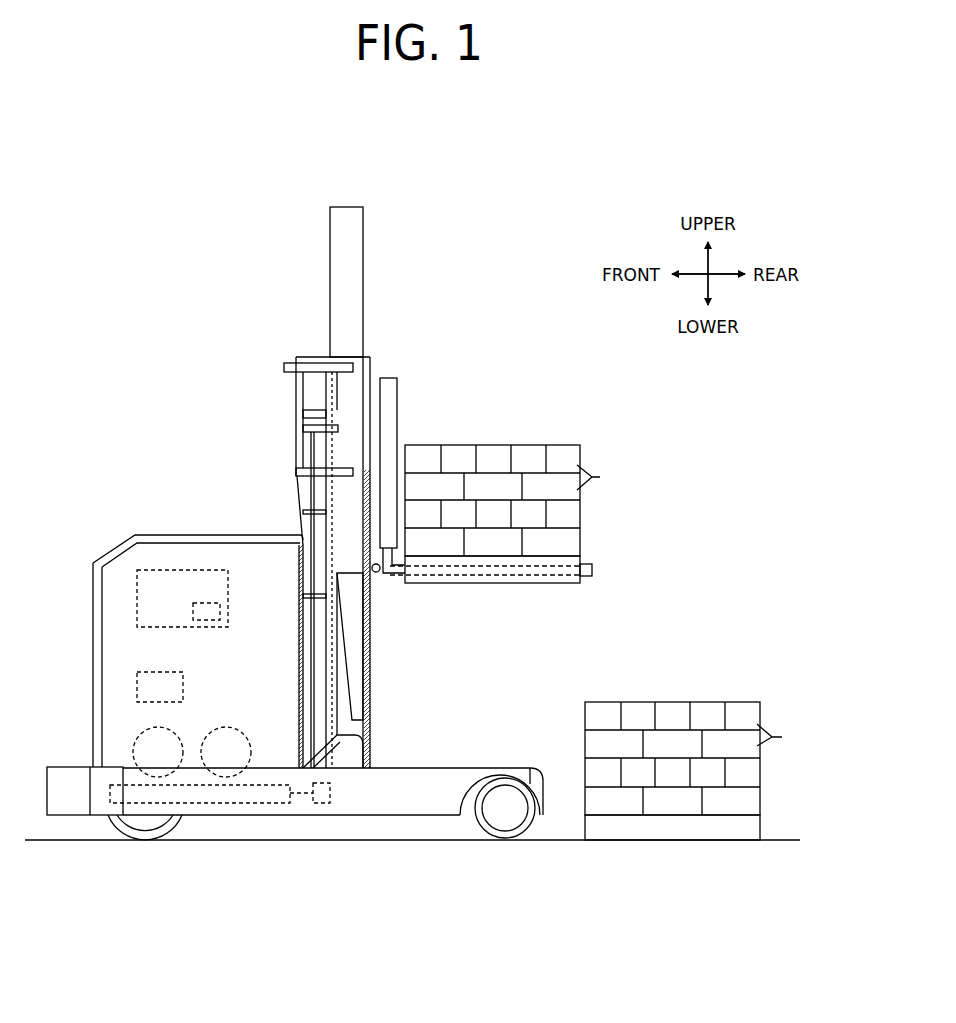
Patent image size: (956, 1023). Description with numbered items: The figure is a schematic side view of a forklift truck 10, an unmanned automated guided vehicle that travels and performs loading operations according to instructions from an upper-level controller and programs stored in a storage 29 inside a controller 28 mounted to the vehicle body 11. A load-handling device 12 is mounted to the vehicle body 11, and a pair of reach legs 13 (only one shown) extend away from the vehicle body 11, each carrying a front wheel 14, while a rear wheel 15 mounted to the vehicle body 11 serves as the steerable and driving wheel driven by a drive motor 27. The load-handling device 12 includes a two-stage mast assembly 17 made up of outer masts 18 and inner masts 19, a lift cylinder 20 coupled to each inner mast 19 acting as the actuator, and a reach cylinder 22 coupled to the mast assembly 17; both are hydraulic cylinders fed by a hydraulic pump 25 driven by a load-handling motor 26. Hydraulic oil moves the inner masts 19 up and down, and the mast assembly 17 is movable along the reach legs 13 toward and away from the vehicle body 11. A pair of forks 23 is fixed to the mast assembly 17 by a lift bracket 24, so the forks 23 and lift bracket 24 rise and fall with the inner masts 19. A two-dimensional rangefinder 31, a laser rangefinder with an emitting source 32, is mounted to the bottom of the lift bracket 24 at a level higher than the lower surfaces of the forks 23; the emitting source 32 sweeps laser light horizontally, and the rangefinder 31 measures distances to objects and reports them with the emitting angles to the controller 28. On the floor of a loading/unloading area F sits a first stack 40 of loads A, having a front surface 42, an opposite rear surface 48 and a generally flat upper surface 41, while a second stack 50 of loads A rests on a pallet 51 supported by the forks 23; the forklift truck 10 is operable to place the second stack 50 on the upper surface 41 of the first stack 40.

The forklift truck 10 is at (161, 319).
The vehicle body 11 is at (157, 534).
The load-handling device 12 is at (393, 349).
The reach leg 13 is at (463, 768).
The front wheel 14 is at (538, 826).
The rear wheel 15 is at (183, 835).
The mast assembly 17 is at (383, 653).
The outer mast 18 is at (366, 736).
The inner mast 19 is at (364, 284).
The lift cylinder 20 is at (312, 528).
The reach cylinder 22 is at (270, 784).
The fork 23 is at (596, 571).
The lift bracket 24 is at (394, 448).
The hydraulic pump 25 is at (186, 690).
The load-handling motor 26 is at (232, 728).
The drive motor 27 is at (162, 728).
The controller 28 is at (231, 579).
The storage 29 is at (223, 612).
The two-dimensional rangefinder 31 is at (392, 577).
The emitting source 32 is at (377, 575).
The first stack of loads 40 is at (675, 751).
The upper surface 41 is at (716, 702).
The front surface 42 is at (584, 744).
The rear surface 48 is at (583, 515).
The second stack of loads 50 is at (520, 535).
The pallet 51 is at (523, 586).
The loads A is at (599, 480).
The loading/unloading area F is at (748, 840).